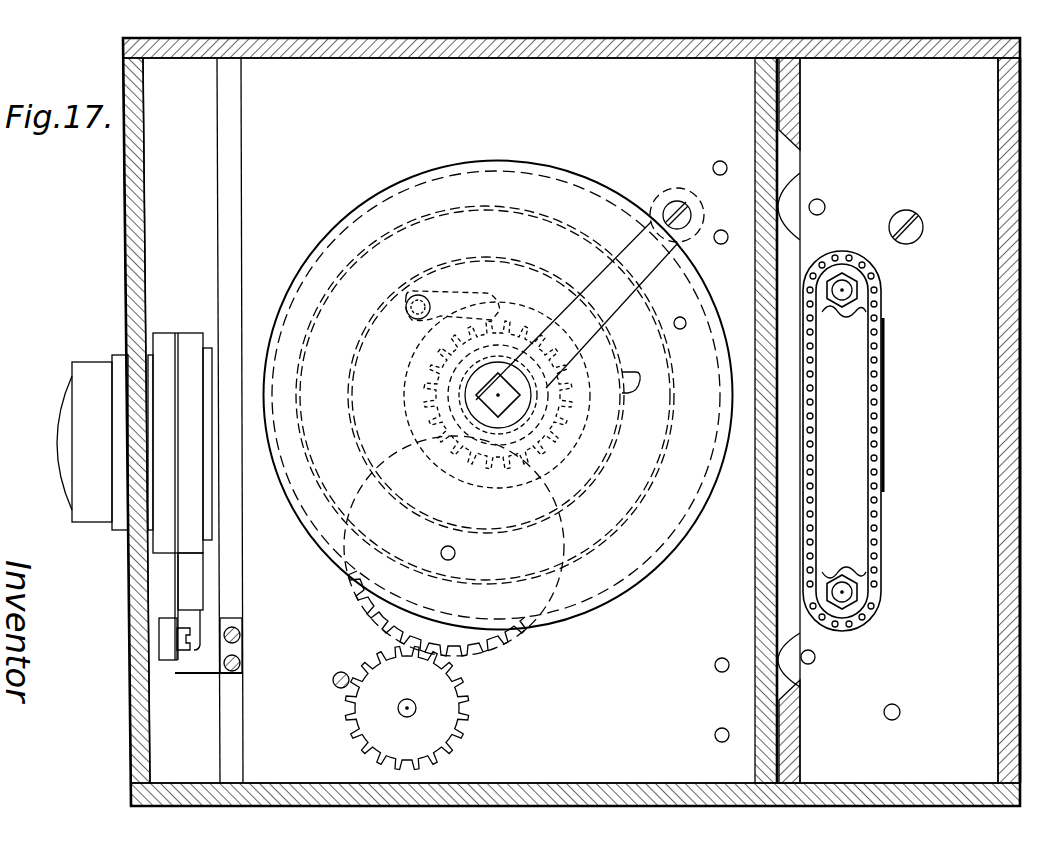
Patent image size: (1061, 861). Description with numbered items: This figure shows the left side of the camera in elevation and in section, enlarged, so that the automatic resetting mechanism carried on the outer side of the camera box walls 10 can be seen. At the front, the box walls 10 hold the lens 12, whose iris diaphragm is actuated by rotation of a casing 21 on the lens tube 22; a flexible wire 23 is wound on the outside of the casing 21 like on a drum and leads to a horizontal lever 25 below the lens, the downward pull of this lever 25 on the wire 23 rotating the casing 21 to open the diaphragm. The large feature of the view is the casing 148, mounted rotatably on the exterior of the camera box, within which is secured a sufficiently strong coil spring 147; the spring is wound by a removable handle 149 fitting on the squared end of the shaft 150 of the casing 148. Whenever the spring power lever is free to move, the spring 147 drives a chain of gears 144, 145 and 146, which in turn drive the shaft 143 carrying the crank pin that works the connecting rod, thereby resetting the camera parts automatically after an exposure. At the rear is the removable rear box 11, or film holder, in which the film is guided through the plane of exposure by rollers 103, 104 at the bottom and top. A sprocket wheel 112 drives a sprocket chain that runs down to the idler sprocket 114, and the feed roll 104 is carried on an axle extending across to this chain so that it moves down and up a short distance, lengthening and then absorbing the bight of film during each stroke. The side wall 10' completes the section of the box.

The camera box walls 10 is at (571, 422).
The housing side wall 10' is at (102, 420).
The removable rear box 11 is at (1022, 330).
The lens 12 is at (85, 368).
The casing 21 is at (185, 343).
The lens tube 22 is at (122, 362).
The flexible wire 23 is at (178, 594).
The horizontal lever 25 is at (165, 656).
The roller 103 is at (790, 655).
The roller 104 is at (793, 195).
The sprocket wheel 112 is at (860, 297).
The idler sprocket 114 is at (856, 577).
The shaft 143 is at (397, 710).
The gear 144 is at (443, 703).
The gear 145 is at (463, 638).
The gear 146 is at (548, 440).
The coil spring 147 is at (608, 412).
The casing 148 is at (680, 528).
The removable handle 149 is at (665, 195).
The shaft 150 is at (550, 385).